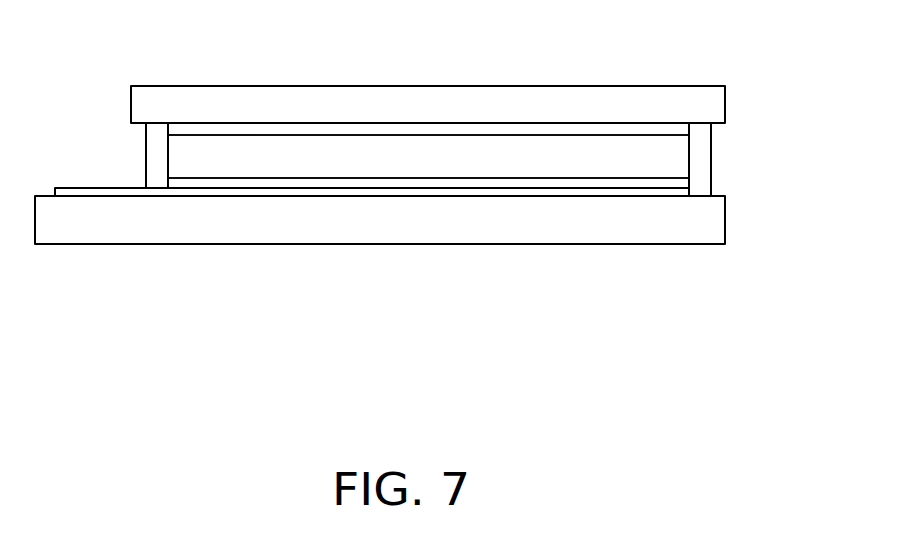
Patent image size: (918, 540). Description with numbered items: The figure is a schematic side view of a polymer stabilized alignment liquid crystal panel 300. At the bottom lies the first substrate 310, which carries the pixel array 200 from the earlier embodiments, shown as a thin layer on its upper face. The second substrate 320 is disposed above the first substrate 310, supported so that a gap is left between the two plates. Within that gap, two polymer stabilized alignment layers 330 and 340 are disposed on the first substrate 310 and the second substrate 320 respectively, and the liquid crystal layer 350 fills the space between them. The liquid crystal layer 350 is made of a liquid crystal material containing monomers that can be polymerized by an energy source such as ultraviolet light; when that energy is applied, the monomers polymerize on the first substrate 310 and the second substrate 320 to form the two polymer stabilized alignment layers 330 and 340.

The polymer stabilized alignment liquid crystal panel 300 is at (419, 194).
The first substrate 310 is at (717, 220).
The second substrate 320 is at (717, 107).
The polymer stabilized alignment layer 330 is at (590, 184).
The polymer stabilized alignment layer 340 is at (405, 128).
The liquid crystal layer 350 is at (472, 160).
The pixel array 200 is at (272, 190).